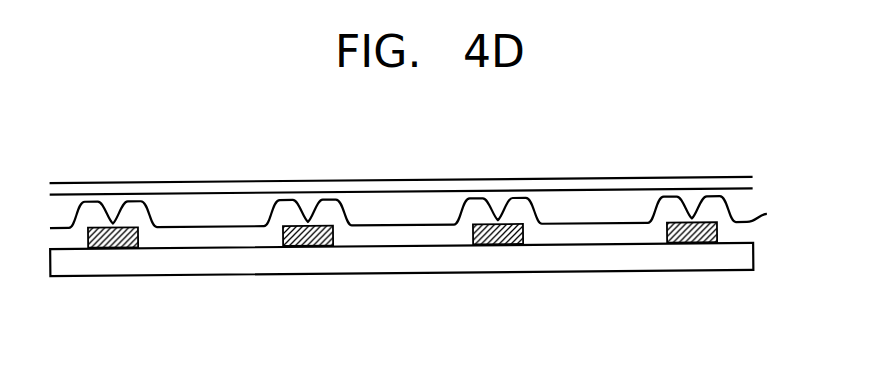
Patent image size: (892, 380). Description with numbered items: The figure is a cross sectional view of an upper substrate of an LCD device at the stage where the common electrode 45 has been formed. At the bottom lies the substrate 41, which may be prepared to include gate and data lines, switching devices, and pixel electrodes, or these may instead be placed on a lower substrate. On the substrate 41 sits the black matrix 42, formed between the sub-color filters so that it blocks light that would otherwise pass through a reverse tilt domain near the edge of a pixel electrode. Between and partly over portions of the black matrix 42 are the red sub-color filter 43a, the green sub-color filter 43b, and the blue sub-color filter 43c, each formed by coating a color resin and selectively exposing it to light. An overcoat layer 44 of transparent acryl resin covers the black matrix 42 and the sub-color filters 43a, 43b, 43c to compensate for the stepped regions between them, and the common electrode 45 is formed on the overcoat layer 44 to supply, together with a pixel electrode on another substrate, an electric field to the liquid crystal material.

The substrate 41 is at (748, 258).
The black matrix 42 is at (420, 222).
The red sub-color filter 43a is at (209, 242).
The green sub-color filter 43b is at (402, 242).
The blue sub-color filter 43c is at (594, 240).
The overcoat layer 44 is at (589, 195).
The common electrode 45 is at (682, 183).